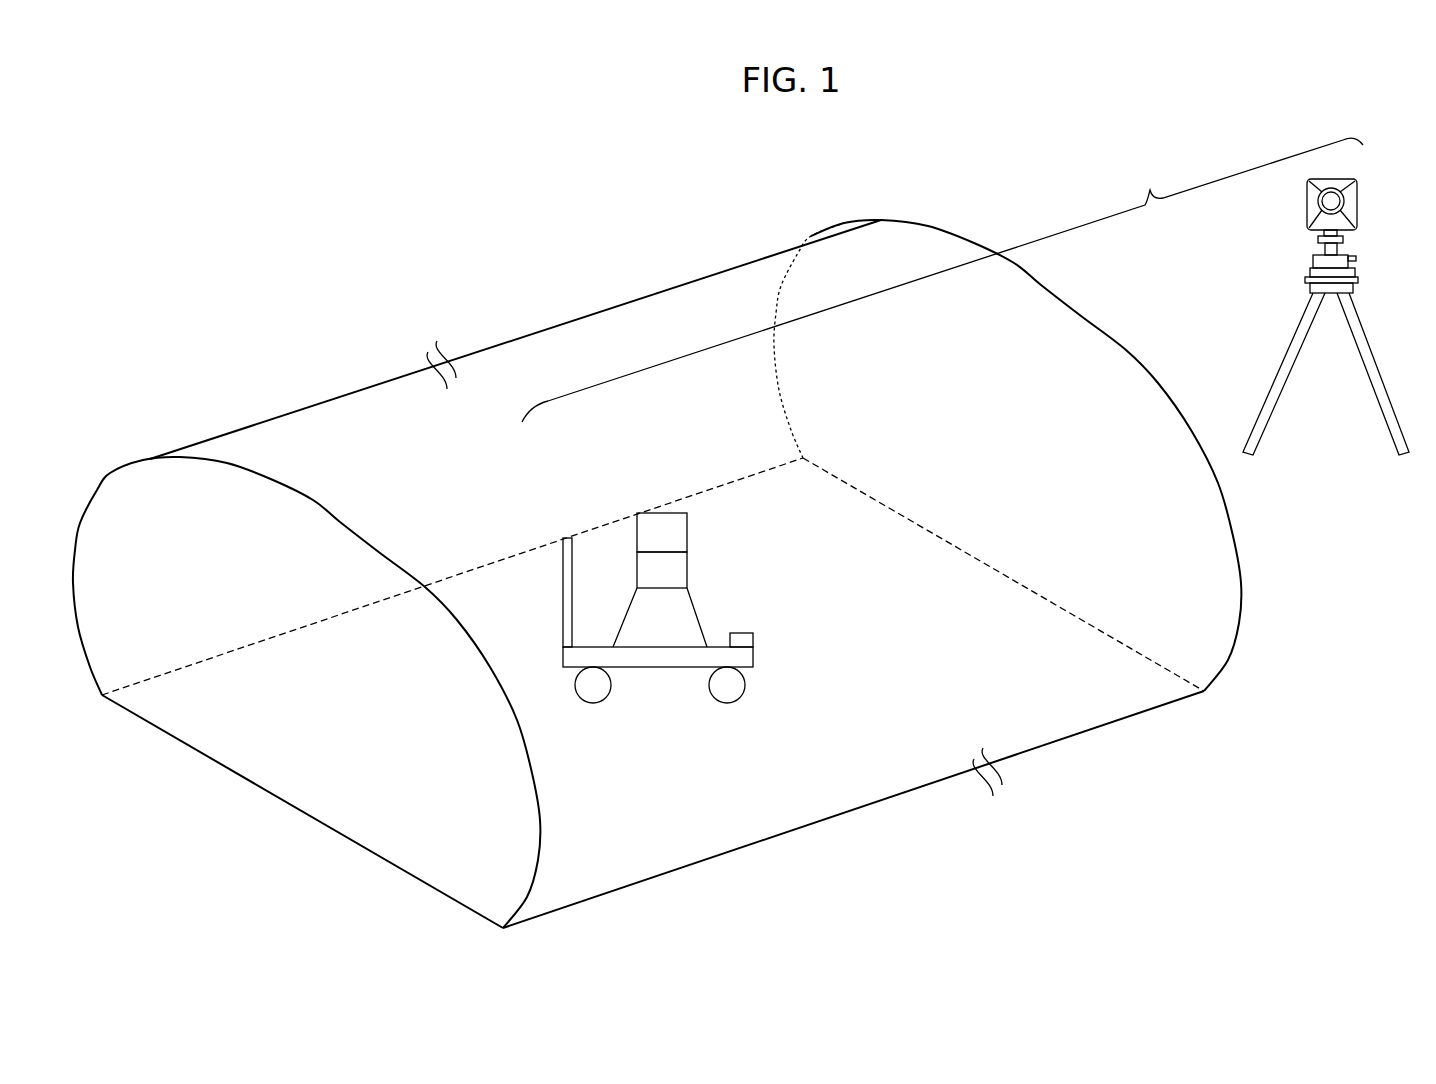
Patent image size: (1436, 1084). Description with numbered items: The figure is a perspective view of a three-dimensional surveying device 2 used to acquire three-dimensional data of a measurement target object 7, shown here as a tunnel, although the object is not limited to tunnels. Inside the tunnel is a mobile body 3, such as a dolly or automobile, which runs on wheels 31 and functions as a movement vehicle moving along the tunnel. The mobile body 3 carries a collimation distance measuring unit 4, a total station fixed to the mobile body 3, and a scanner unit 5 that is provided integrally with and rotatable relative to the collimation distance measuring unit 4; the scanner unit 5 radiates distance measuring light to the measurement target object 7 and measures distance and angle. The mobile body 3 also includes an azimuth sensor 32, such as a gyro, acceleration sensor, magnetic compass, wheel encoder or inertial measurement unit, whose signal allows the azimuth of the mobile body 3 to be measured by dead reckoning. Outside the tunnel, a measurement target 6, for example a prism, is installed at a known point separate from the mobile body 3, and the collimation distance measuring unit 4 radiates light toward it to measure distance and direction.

The three-dimensional surveying device 2 is at (942, 280).
The mobile body 3 is at (743, 655).
The wheels 31 is at (593, 688).
The azimuth sensor 32 is at (740, 642).
The collimation distance measuring unit 4 is at (673, 568).
The scanner unit 5 is at (673, 530).
The measurement target 6 is at (1358, 197).
The measurement target object 7 is at (655, 292).